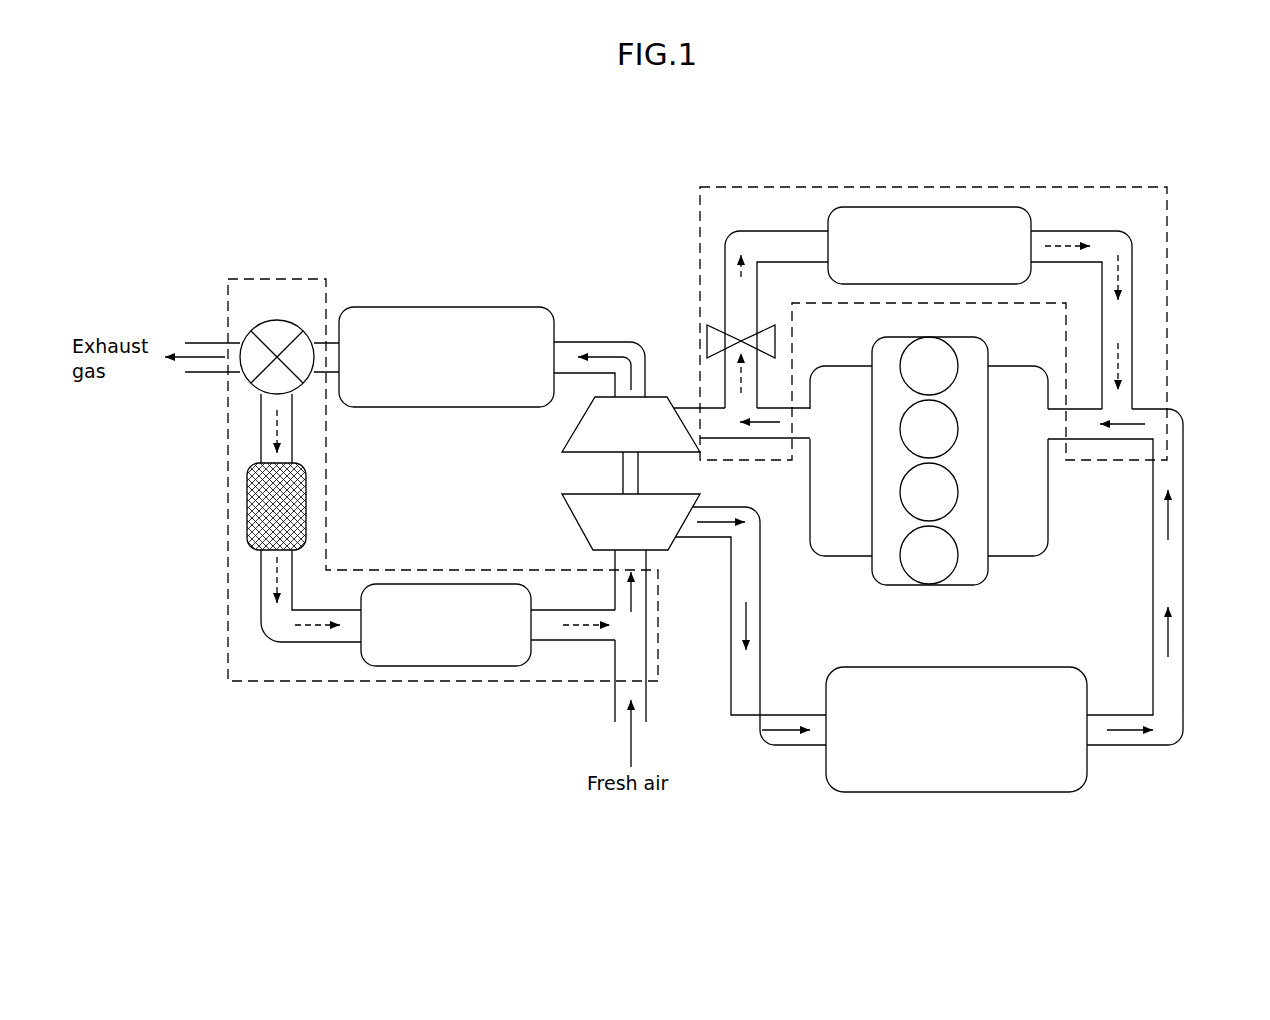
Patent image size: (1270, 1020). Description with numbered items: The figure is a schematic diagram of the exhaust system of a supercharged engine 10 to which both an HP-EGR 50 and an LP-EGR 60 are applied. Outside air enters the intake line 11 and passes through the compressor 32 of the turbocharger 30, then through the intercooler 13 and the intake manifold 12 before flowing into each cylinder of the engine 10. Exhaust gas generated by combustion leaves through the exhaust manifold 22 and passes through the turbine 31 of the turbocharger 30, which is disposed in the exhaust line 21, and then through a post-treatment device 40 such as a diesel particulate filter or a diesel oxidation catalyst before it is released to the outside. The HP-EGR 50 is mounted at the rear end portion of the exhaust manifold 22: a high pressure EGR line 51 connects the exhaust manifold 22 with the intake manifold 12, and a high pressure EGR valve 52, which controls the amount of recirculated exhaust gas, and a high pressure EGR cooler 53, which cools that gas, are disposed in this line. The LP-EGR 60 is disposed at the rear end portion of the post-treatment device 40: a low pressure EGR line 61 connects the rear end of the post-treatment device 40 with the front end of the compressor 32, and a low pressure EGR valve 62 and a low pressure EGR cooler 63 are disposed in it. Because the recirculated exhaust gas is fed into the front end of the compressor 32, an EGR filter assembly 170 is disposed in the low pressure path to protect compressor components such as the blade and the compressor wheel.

The engine 10 is at (970, 353).
The intake line 11 is at (775, 740).
The intake manifold 12 is at (1017, 538).
The intercooler 13 is at (1072, 777).
The exhaust line 21 is at (592, 340).
The exhaust manifold 22 is at (842, 542).
The turbocharger 30 is at (542, 473).
The turbine 31 is at (598, 424).
The compressor 32 is at (598, 530).
The post-treatment device 40 is at (446, 307).
The HP-EGR 50 is at (1167, 278).
The high pressure EGR line 51 is at (785, 228).
The high pressure EGR valve 52 is at (747, 345).
The high pressure EGR cooler 53 is at (928, 207).
The LP-EGR 60 is at (305, 681).
The low pressure EGR line 61 is at (268, 615).
The low pressure EGR valve 62 is at (276, 318).
The low pressure EGR cooler 63 is at (446, 655).
The EGR filter assembly 170 is at (256, 508).